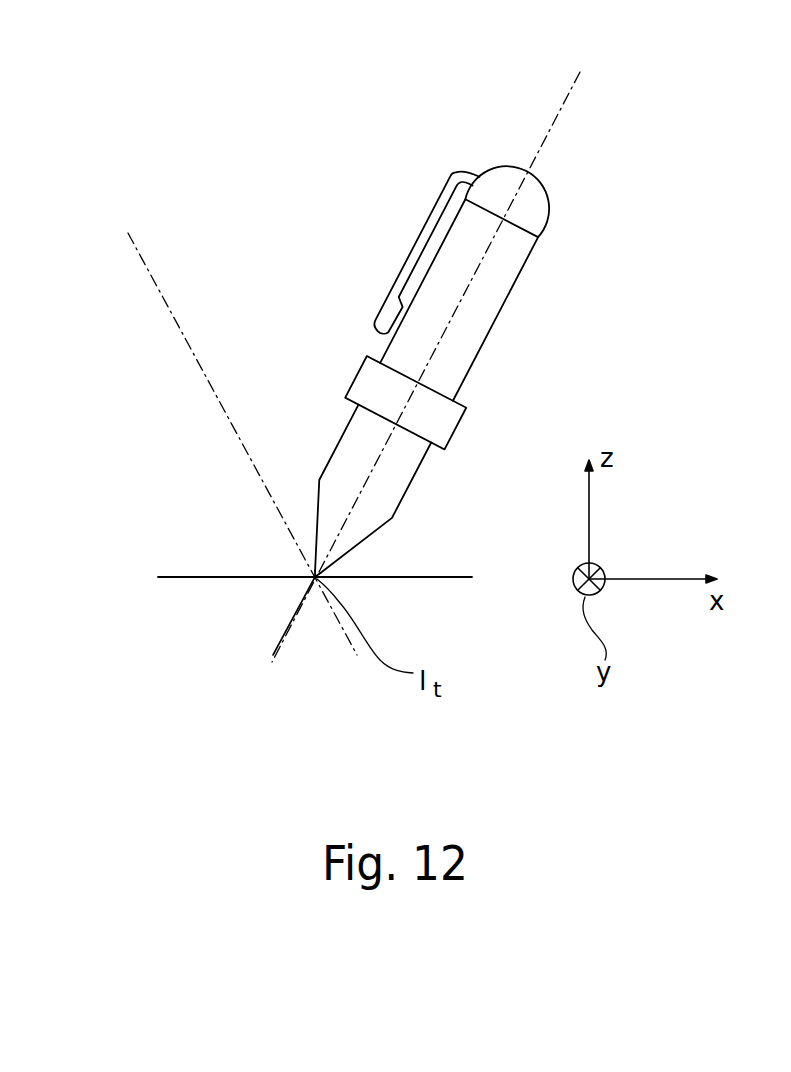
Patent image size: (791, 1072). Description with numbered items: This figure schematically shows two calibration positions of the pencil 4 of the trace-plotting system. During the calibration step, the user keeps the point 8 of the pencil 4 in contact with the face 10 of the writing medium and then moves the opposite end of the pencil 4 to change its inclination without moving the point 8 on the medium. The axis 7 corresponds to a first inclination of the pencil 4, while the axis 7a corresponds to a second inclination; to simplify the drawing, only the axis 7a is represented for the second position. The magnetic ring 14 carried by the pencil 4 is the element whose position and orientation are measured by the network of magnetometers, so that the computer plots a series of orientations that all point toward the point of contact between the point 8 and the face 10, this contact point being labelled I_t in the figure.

The pencil 4 is at (502, 315).
The axis 7 is at (556, 121).
The axis 7a is at (215, 393).
The point 8 is at (317, 577).
The face 10 is at (193, 577).
The magnetic ring 14 is at (461, 423).